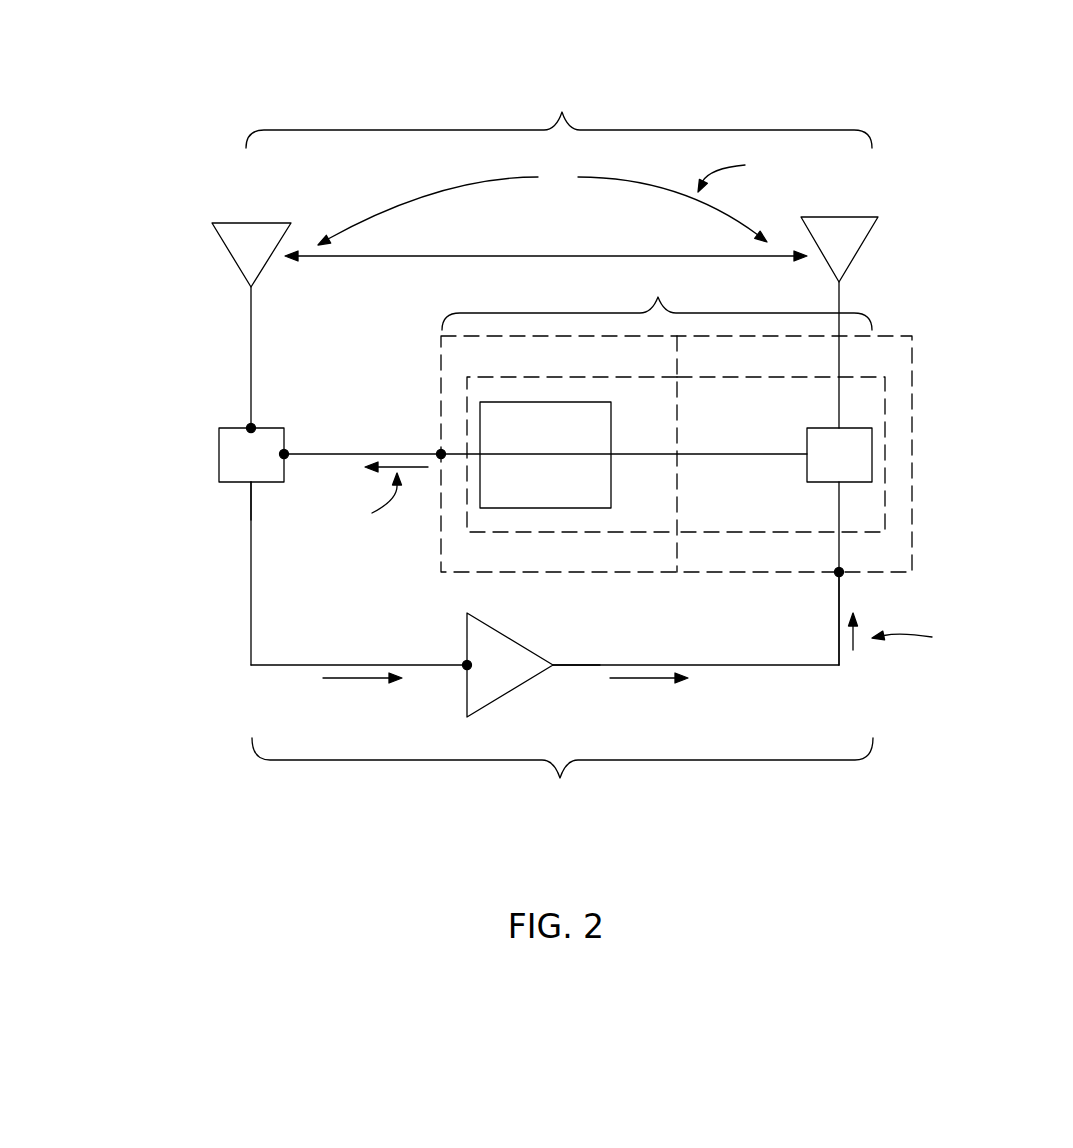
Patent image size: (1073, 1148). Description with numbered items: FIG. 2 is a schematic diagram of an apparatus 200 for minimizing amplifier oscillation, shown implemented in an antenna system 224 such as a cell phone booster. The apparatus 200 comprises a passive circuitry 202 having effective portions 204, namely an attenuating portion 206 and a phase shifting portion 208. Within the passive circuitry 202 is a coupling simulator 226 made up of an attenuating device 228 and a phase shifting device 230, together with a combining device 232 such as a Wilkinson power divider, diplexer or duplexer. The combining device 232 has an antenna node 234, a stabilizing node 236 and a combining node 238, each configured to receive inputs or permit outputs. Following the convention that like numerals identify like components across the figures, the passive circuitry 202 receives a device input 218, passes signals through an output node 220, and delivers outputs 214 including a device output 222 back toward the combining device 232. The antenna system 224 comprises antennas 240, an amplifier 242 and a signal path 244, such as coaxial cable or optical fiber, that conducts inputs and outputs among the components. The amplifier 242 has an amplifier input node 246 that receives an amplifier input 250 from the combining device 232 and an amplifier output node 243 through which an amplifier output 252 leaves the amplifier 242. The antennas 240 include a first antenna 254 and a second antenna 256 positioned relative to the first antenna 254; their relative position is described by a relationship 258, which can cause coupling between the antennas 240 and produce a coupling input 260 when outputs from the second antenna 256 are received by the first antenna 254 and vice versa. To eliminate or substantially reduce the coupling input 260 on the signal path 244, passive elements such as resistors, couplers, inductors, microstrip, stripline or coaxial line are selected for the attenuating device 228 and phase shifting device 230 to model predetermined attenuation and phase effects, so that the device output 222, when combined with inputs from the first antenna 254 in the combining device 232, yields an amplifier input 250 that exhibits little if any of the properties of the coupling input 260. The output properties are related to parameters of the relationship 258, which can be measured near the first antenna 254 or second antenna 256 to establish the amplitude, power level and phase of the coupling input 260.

The apparatus 200 is at (953, 340).
The passive circuitry 202 is at (897, 335).
The effective portions 204 is at (657, 421).
The attenuating portion 206 is at (781, 438).
The phase shifting portion 208 is at (572, 438).
The outputs 214 is at (650, 561).
The device input 218 is at (853, 648).
The output node 220 is at (441, 454).
The device output 222 is at (418, 470).
The antenna system 224 is at (741, 171).
The coupling simulator 226 is at (612, 538).
The attenuating device 228 is at (839, 455).
The phase shifting device 230 is at (545, 455).
The combining device 232 is at (251, 455).
The antenna node 234 is at (253, 426).
The stabilizing node 236 is at (286, 452).
The combining node 238 is at (249, 488).
The antennas 240 is at (542, 205).
The amplifier 242 is at (510, 665).
The amplifier output 243 is at (556, 668).
The signal path 244 is at (562, 773).
The amplifier input node 246 is at (462, 668).
The amplifier input 250 is at (352, 680).
The amplifier output 252 is at (645, 680).
The first antenna 254 is at (251, 325).
The second antenna 256 is at (839, 322).
The relationship 258 is at (559, 116).
The coupling input 260 is at (545, 254).